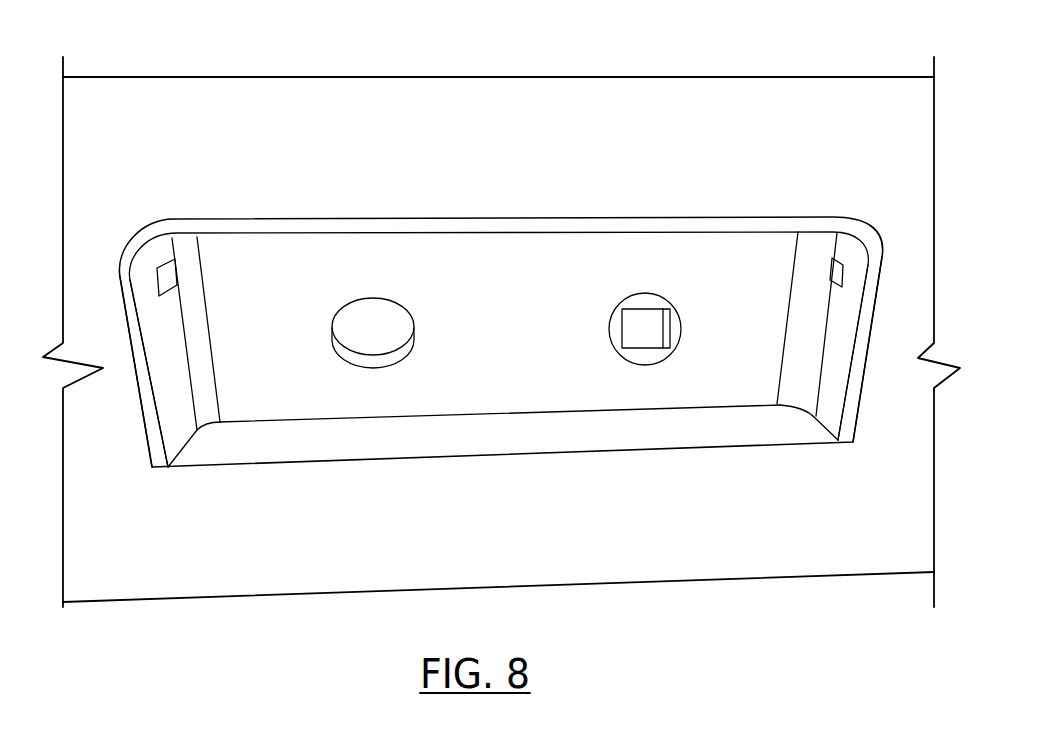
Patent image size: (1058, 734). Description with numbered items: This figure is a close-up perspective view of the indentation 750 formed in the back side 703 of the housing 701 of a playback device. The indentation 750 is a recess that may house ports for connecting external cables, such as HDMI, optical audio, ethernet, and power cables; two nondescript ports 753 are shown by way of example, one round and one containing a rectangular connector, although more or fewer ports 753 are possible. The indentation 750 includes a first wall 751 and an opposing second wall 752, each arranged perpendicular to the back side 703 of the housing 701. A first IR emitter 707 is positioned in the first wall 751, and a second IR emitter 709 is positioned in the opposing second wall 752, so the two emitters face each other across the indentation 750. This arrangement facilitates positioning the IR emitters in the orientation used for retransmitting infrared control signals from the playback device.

The housing 701 is at (813, 87).
The back side 703 is at (125, 582).
The first IR emitter 707 is at (840, 262).
The second IR emitter 709 is at (167, 280).
The indentation 750 is at (448, 230).
The first wall 751 is at (867, 332).
The second wall 752 is at (142, 402).
The ports 753 is at (368, 370).